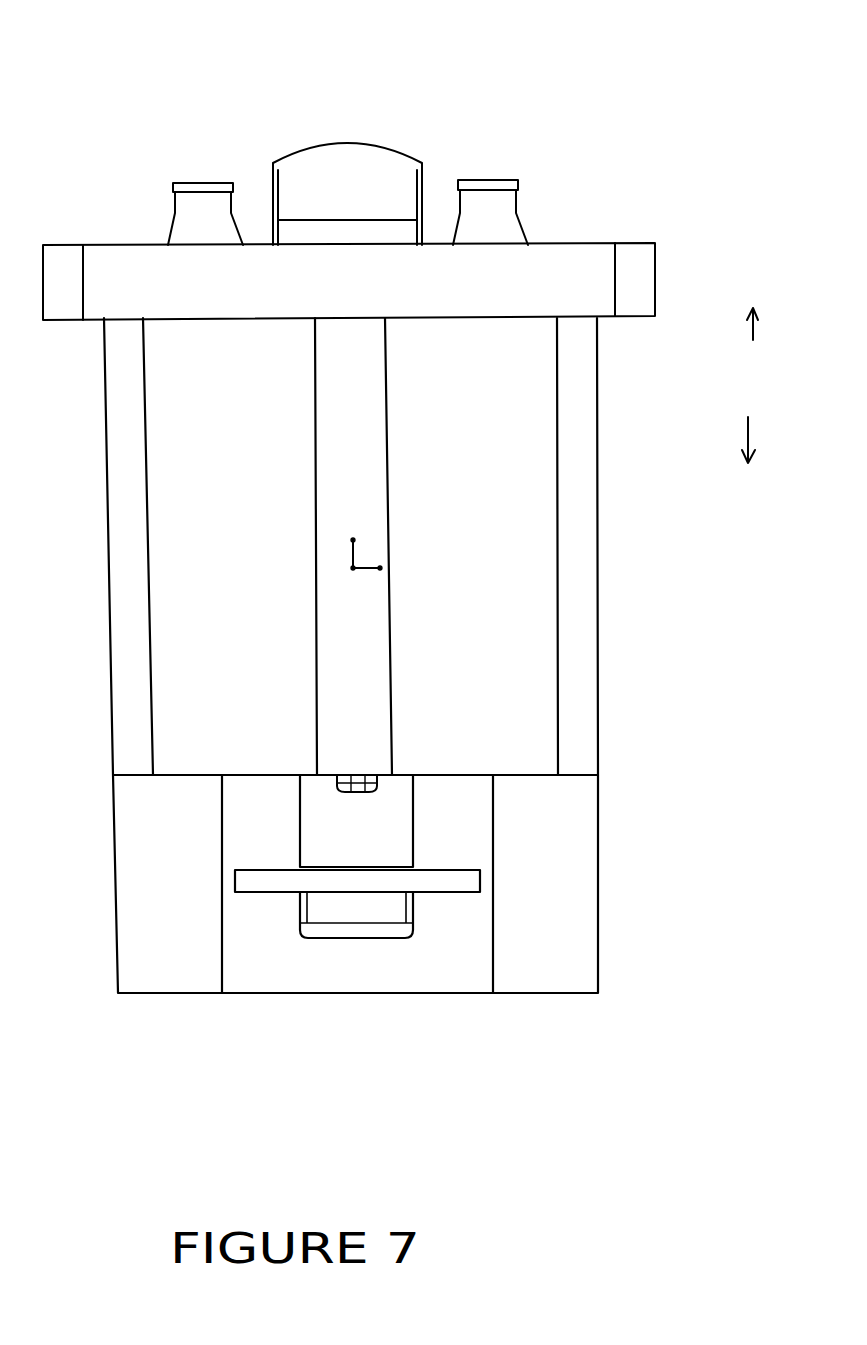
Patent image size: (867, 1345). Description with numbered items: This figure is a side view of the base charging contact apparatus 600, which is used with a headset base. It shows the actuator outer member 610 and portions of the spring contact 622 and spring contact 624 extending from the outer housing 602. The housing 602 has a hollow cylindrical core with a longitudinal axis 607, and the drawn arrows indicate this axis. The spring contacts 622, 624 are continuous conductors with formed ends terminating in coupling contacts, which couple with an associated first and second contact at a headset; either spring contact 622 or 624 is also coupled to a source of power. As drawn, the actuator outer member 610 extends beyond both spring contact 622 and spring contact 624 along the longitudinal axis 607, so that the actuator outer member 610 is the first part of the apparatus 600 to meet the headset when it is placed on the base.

The base charging contact apparatus 600 is at (385, 32).
The outer housing 602 is at (588, 562).
The longitudinal axis 607 is at (755, 385).
The actuator outer member 610 is at (356, 200).
The spring contact 622 is at (198, 182).
The spring contact 624 is at (485, 180).